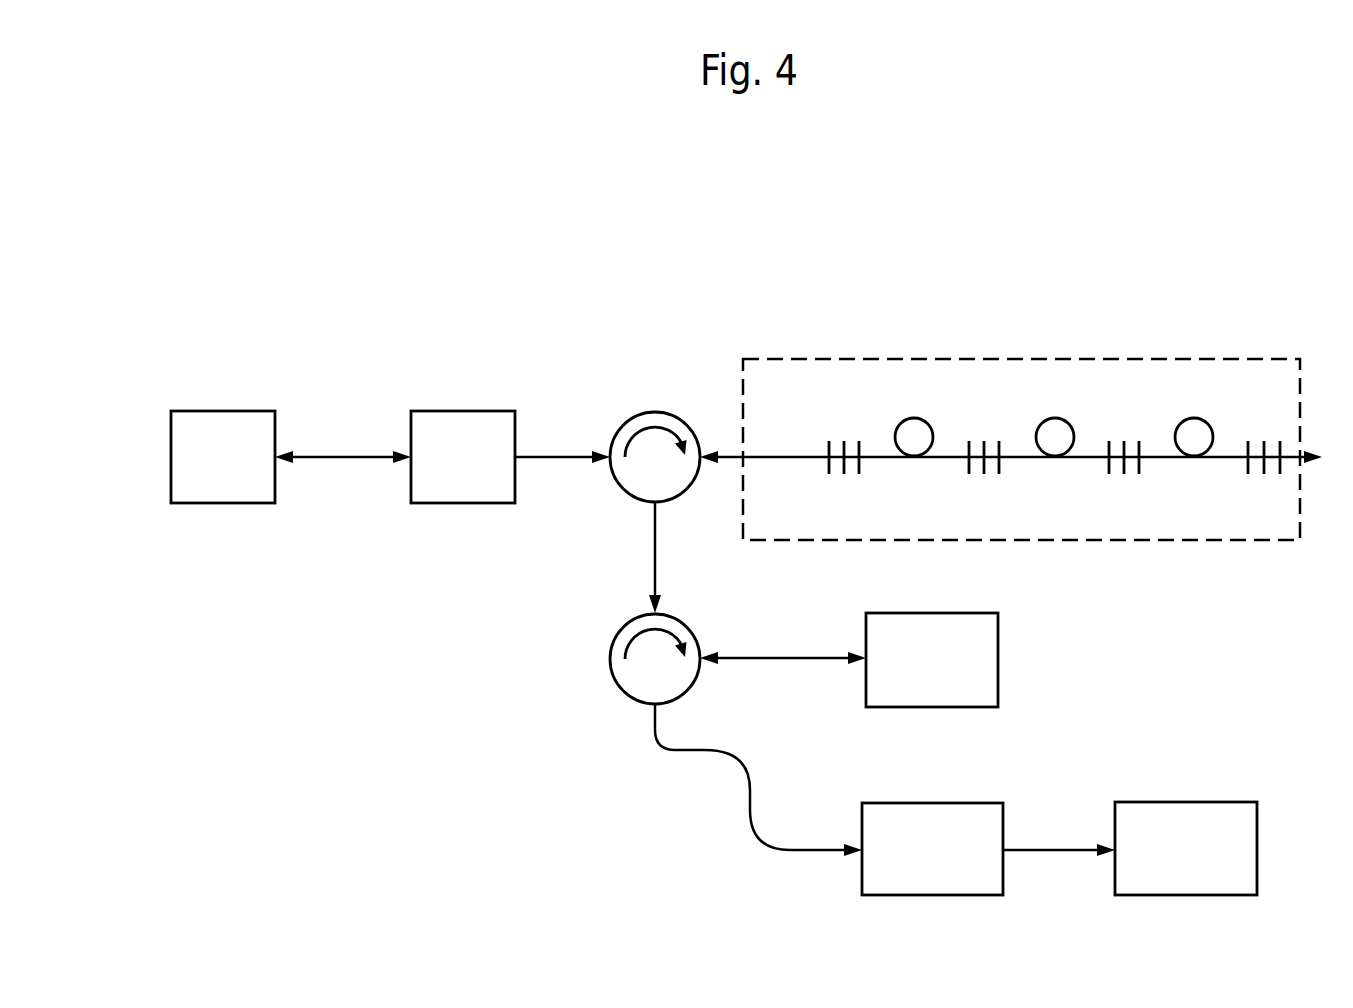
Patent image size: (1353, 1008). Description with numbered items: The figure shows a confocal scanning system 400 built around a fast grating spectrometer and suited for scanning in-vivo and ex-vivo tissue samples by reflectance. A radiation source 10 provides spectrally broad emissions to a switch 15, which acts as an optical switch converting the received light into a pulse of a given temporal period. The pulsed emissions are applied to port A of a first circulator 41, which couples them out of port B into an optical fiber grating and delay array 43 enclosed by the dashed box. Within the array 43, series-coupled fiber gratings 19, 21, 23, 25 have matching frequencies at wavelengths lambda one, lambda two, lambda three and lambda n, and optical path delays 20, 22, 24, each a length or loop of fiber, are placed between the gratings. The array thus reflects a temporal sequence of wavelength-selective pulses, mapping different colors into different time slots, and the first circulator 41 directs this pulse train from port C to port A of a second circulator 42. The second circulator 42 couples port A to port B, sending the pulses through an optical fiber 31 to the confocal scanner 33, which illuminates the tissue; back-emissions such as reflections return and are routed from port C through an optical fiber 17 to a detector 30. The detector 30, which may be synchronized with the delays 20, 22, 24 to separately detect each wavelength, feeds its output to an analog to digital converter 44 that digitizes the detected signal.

The radiation source 10 is at (229, 436).
The switch 15 is at (476, 436).
The first circulator 41 is at (654, 451).
The optical fiber grating and delay array 43 is at (1021, 429).
The optical path delay 20 is at (935, 414).
The optical path delay 22 is at (1076, 414).
The optical path delay 24 is at (1215, 414).
The fiber grating 19 is at (817, 461).
The fiber grating 21 is at (957, 461).
The fiber grating 23 is at (1094, 461).
The fiber grating 25 is at (1237, 461).
The confocal scanning system 400 is at (1115, 266).
The second circulator 42 is at (680, 662).
The optical fiber 31 is at (783, 642).
The confocal scanner 33 is at (932, 641).
The optical fiber 17 is at (758, 780).
The detector 30 is at (932, 826).
The analog to digital converter 44 is at (1186, 826).